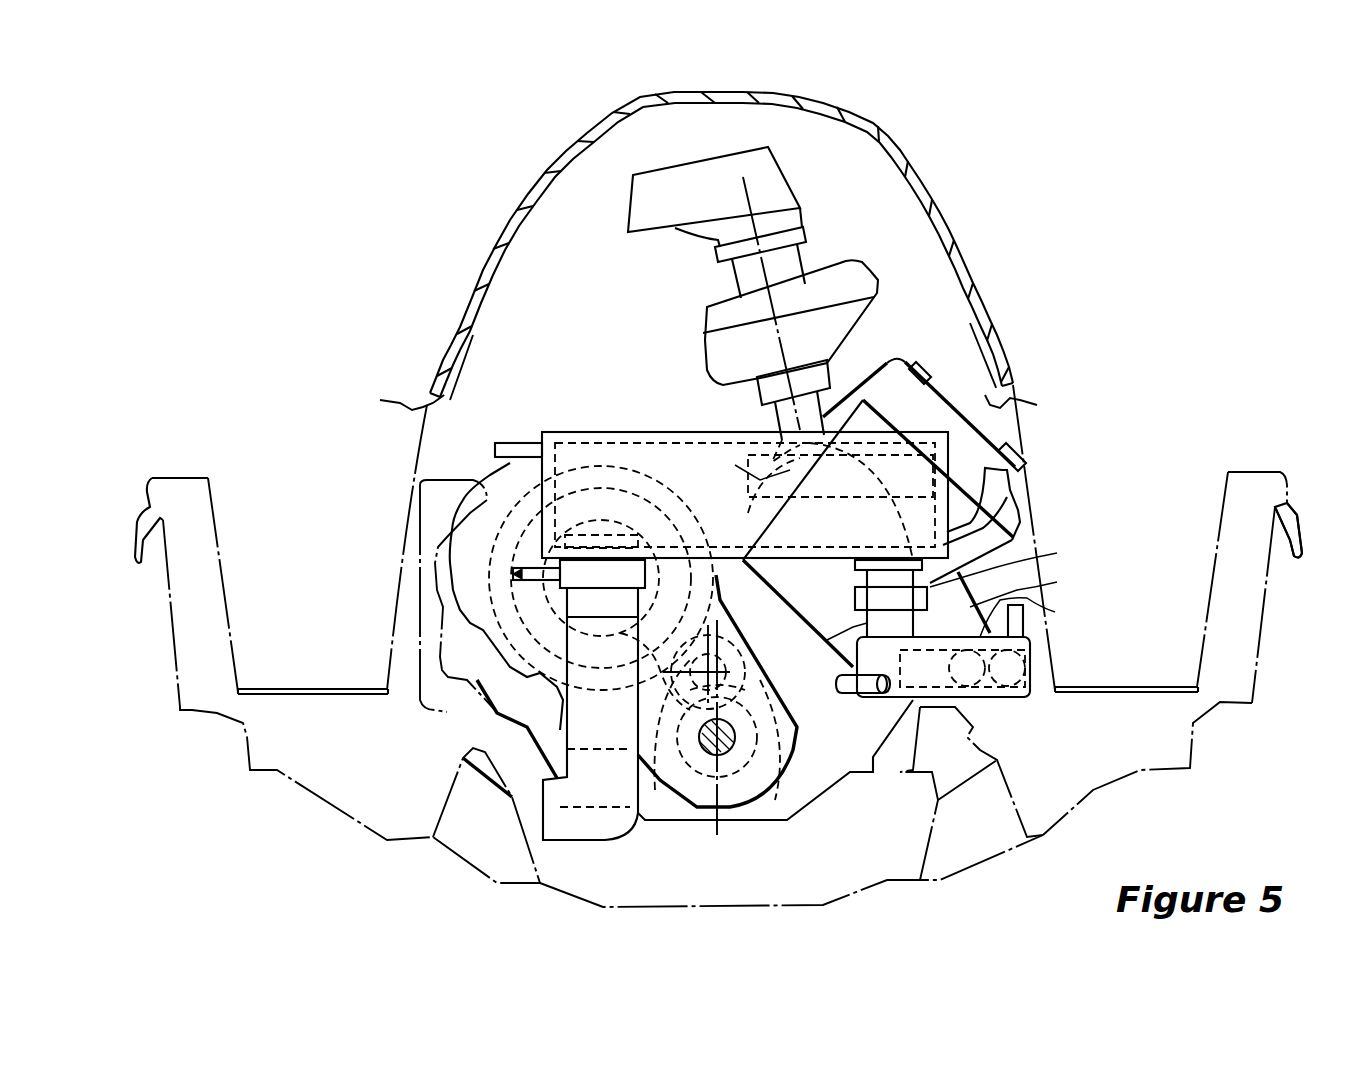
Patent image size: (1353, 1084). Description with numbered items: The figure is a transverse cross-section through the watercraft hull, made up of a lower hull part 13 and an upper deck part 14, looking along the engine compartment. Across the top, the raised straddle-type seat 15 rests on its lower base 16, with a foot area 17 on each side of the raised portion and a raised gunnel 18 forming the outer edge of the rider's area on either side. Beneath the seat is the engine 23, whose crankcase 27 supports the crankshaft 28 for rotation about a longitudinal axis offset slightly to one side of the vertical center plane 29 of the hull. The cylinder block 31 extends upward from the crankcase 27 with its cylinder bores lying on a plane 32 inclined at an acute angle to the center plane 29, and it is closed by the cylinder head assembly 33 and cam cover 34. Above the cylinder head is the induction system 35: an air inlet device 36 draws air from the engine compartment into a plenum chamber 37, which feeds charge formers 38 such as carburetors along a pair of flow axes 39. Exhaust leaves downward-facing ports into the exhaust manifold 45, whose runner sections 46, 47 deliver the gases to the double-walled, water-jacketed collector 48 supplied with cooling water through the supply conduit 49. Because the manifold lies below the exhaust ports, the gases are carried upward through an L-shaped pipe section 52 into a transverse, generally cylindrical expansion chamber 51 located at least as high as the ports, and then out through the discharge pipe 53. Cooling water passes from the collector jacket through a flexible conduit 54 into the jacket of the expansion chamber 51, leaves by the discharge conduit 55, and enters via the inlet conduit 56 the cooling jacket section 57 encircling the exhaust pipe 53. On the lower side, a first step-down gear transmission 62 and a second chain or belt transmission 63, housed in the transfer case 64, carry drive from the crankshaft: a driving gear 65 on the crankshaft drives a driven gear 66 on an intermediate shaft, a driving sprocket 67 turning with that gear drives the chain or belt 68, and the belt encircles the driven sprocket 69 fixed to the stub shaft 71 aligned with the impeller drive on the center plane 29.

The lower hull part 13 is at (1000, 837).
The upper deck part 14 is at (1285, 478).
The straddle-type seat 15 is at (928, 190).
The lower base 16 is at (400, 408).
The foot areas 17 is at (255, 687).
The raised gunnels 18 is at (172, 478).
The engine 23 is at (1022, 513).
The crankcase 27 is at (812, 795).
The crankshaft 28 is at (737, 660).
The center plane 29 is at (727, 827).
The cylinder block 31 is at (742, 465).
The cylinder bore plane 32 is at (970, 420).
The cylinder head assembly 33 is at (850, 413).
The cam cover 34 is at (930, 403).
The induction system 35 is at (832, 228).
The air inlet device 36 is at (627, 213).
The plenum chamber 37 is at (703, 312).
The charge formers 38 is at (785, 403).
The flow axes 39 is at (767, 197).
The exhaust manifold 45 is at (1003, 705).
The runner section 46 is at (1038, 602).
The runner section 47 is at (1016, 560).
The expansion chamber collector section 48 is at (1032, 668).
The supply conduit 49 is at (1023, 617).
The expansion chamber 51 is at (658, 432).
The L-shaped pipe section 52 is at (843, 562).
The discharge pipe 53 is at (478, 752).
The flexible conduit 54 is at (1007, 482).
The discharge conduit 55 is at (505, 440).
The inlet conduit 56 is at (515, 555).
The cooling jacket section 57 is at (592, 567).
The first step-down gear transmission 62 is at (497, 680).
The second chain or belt transmission 63 is at (652, 800).
The transfer case 64 is at (798, 732).
The driving gear 65 is at (760, 690).
The driven gear 66 is at (420, 597).
The driving sprocket 67 is at (522, 657).
The drive chain or belt 68 is at (700, 583).
The driven sprocket 69 is at (767, 792).
The stub shaft 71 is at (703, 757).